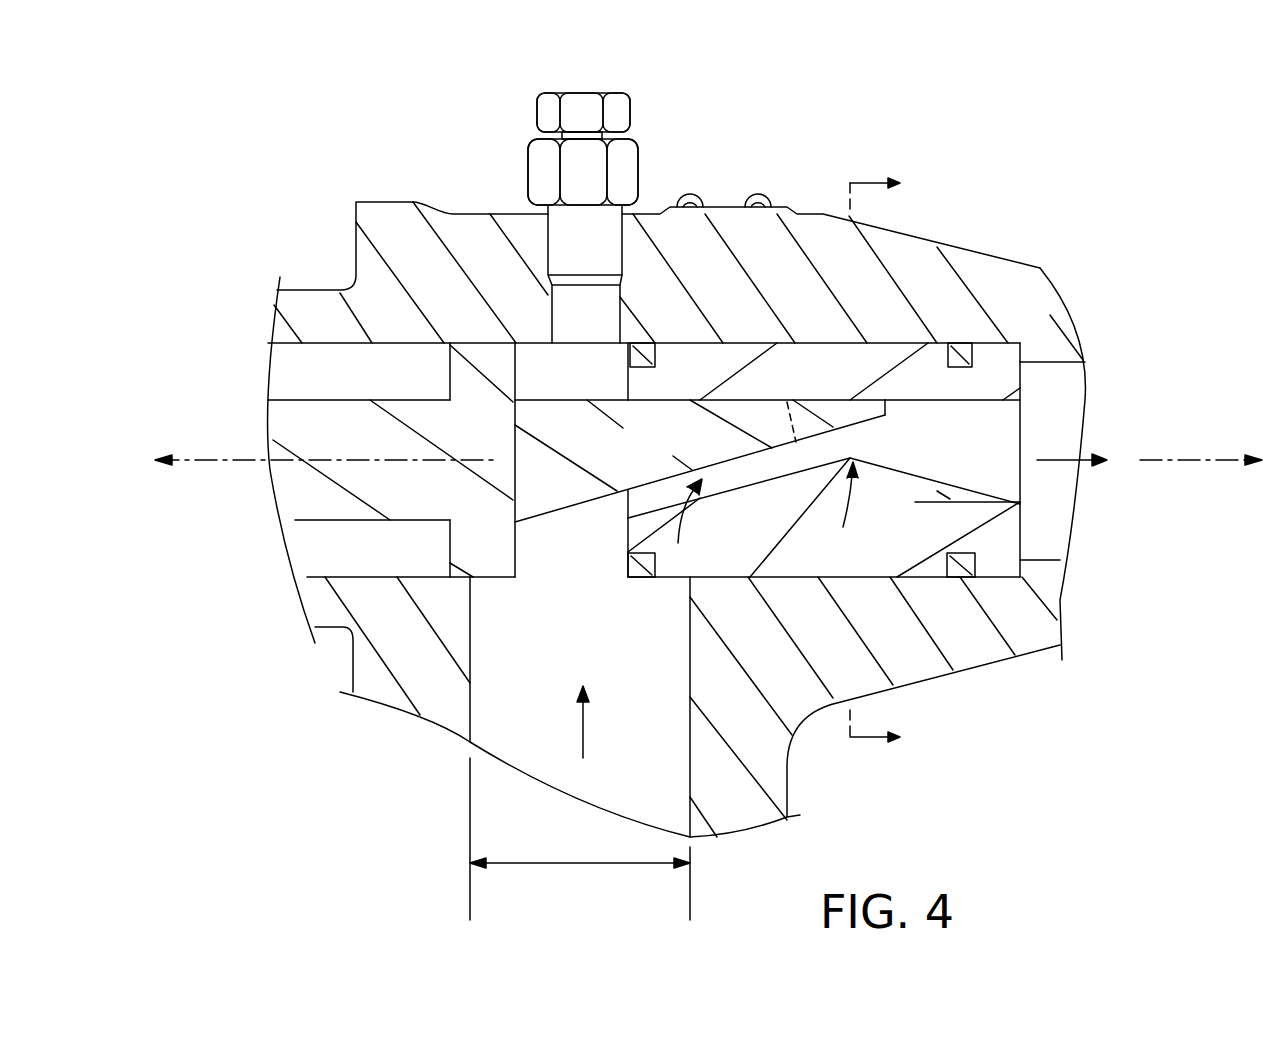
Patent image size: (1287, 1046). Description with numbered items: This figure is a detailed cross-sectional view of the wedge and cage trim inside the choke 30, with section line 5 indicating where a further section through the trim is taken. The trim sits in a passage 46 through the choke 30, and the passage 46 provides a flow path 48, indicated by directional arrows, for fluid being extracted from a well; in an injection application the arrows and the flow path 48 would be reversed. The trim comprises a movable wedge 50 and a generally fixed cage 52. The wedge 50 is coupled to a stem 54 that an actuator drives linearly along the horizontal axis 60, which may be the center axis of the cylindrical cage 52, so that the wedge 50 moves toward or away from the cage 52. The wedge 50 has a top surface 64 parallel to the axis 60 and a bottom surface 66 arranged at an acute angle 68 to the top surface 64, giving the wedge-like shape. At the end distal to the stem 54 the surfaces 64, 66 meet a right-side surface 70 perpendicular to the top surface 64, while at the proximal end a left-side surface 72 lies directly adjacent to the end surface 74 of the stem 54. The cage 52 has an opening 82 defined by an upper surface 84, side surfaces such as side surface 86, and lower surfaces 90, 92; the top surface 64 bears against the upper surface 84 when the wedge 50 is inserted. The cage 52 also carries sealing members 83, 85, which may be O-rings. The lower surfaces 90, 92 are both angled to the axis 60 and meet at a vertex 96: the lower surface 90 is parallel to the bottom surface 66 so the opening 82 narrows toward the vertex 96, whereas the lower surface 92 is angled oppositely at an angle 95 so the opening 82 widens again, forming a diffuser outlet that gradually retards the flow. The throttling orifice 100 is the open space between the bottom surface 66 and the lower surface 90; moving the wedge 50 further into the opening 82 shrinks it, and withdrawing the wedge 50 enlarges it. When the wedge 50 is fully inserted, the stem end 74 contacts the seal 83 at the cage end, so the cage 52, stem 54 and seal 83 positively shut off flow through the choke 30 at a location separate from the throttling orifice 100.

The choke 30 is at (468, 145).
The section line 5- 5 is at (876, 461).
The passage 46 is at (1055, 363).
The flow path 48 is at (1077, 463).
The wedge-shaped member 50 is at (634, 457).
The cage 52 is at (737, 343).
The stem 54 is at (407, 400).
The horizontal axis 60 is at (222, 460).
The top surface 64 is at (550, 400).
The bottom surface 66 is at (603, 498).
The angle 68 is at (785, 410).
The right-side surface 70 is at (885, 405).
The left-side surface 72 is at (512, 425).
The surface of the stem 74 is at (518, 352).
The opening 82 is at (940, 457).
The sealing member 83 is at (635, 367).
The upper surface 84 is at (897, 400).
The sealing member 85 is at (967, 343).
The side surface 86 is at (998, 420).
The lower surface 90 is at (730, 492).
The lower surface 92 is at (898, 473).
The angle 95 is at (1003, 502).
The vertex 96 is at (804, 517).
The throttling orifice 100 is at (669, 528).